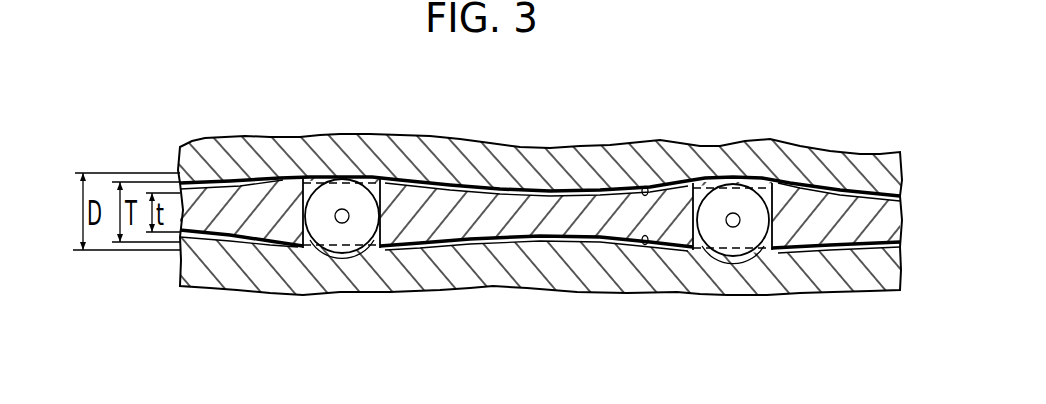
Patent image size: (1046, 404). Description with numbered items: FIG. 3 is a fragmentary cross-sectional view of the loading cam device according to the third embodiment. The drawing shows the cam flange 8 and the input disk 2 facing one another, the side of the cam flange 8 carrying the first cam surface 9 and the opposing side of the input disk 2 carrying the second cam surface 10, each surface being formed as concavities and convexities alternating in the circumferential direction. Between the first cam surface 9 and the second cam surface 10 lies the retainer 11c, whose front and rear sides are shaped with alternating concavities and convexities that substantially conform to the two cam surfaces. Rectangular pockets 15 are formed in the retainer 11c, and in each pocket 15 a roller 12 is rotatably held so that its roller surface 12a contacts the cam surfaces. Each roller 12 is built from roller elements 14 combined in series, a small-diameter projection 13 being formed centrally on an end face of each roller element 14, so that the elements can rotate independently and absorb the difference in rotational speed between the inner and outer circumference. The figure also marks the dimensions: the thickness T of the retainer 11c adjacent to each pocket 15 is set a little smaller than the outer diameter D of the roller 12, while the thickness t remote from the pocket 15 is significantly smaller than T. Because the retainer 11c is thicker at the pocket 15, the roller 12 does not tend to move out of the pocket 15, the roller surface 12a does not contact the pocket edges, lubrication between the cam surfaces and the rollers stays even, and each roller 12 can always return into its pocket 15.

The input disk 2 is at (833, 284).
The cam flange 8 is at (803, 164).
The first cam surface 9 is at (646, 186).
The second cam surface 10 is at (645, 246).
The retainer 11c is at (495, 210).
The roller 12 is at (368, 181).
The roller surface 12a is at (305, 249).
The small-diameter projection 13 is at (303, 178).
The roller element 14 is at (341, 209).
The pocket 15 is at (378, 249).